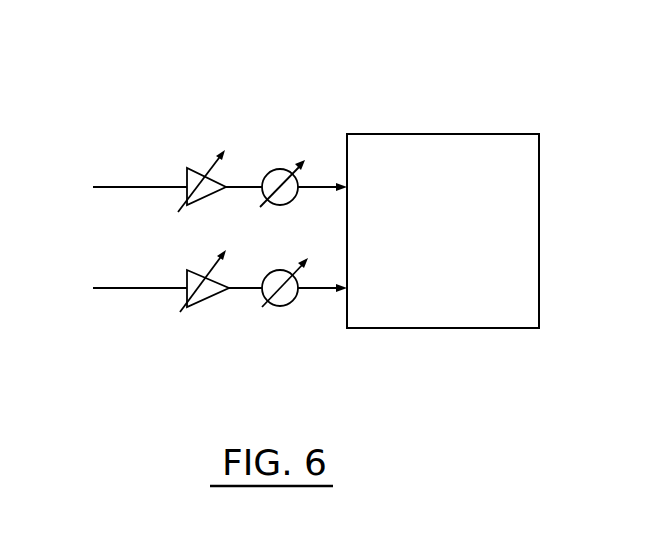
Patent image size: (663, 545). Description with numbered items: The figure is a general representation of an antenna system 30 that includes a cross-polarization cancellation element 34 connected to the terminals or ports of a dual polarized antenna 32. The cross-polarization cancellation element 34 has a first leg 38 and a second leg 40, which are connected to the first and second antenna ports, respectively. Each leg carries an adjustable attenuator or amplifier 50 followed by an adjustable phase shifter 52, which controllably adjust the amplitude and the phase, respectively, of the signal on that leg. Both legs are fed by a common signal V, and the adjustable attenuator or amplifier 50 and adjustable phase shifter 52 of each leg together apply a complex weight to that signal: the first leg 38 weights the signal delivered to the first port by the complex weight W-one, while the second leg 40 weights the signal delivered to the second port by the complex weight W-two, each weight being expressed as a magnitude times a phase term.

The antenna system 30 is at (312, 50).
The dual polarized antenna 32 is at (438, 147).
The cross-polarization cancellation element 34 is at (122, 145).
The first leg 38 is at (317, 183).
The second leg 40 is at (303, 289).
The adjustable attenuator or amplifier 50 is at (210, 196).
The adjustable phase shifter 52 is at (287, 204).